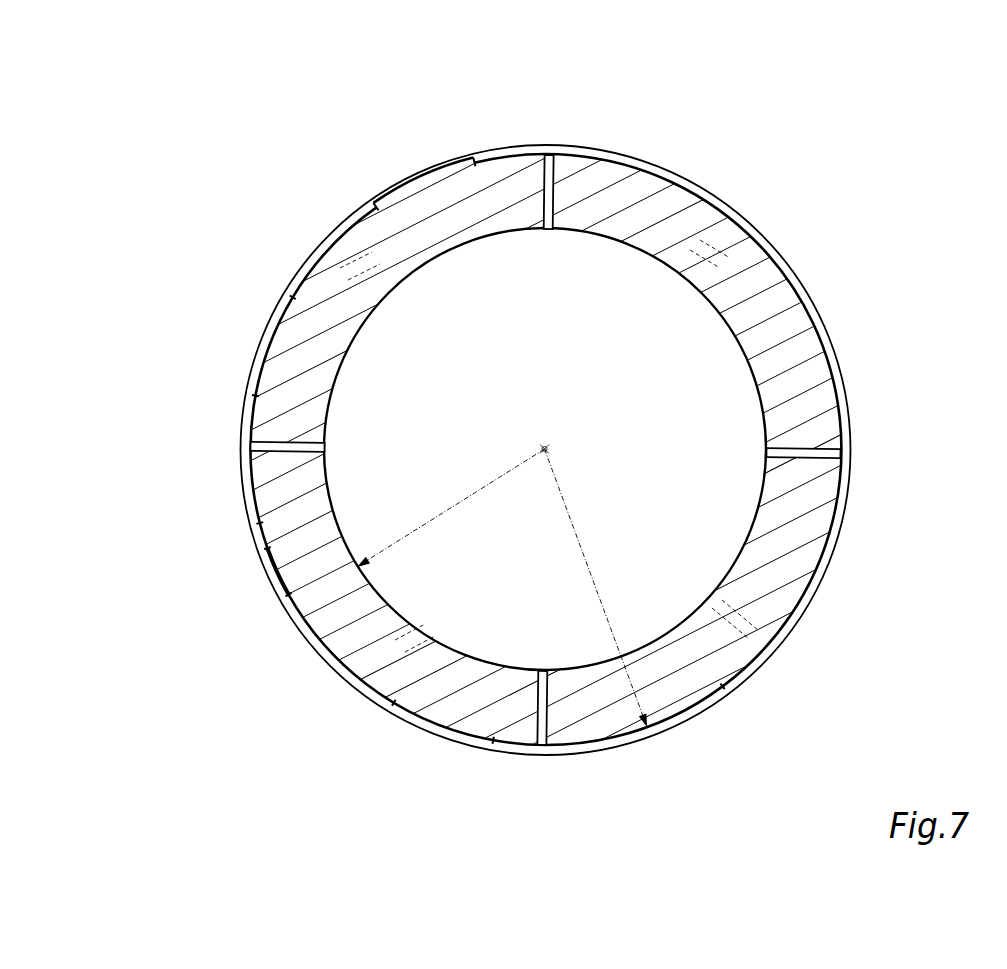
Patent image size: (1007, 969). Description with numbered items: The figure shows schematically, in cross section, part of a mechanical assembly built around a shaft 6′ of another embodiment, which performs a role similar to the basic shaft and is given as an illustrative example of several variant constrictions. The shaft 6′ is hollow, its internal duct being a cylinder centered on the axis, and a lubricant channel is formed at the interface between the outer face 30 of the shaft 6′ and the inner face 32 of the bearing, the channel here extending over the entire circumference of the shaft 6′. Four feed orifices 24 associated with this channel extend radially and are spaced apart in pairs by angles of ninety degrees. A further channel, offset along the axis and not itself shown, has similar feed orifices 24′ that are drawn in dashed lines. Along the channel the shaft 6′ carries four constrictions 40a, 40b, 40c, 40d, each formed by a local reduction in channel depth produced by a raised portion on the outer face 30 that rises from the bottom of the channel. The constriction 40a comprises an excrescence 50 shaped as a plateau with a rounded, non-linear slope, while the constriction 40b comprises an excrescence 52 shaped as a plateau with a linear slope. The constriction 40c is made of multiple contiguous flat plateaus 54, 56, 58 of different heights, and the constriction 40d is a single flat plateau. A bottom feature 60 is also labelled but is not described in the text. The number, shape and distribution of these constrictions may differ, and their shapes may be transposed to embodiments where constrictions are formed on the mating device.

The shaft 6′ is at (520, 444).
The feed orifices 24 is at (564, 172).
The feed orifices 24′ is at (352, 275).
The outer face 30 is at (735, 699).
The inner face 32 is at (491, 142).
The constriction 40a is at (369, 170).
The constriction 40b is at (180, 393).
The constriction 40c is at (201, 600).
The constriction 40d is at (565, 499).
The excrescence 50 is at (413, 168).
The excrescence 52 is at (276, 318).
The flat plateau 54 is at (252, 532).
The flat plateau 56 is at (264, 571).
The flat plateau 58 is at (287, 601).
The segment end step 60 is at (458, 746).